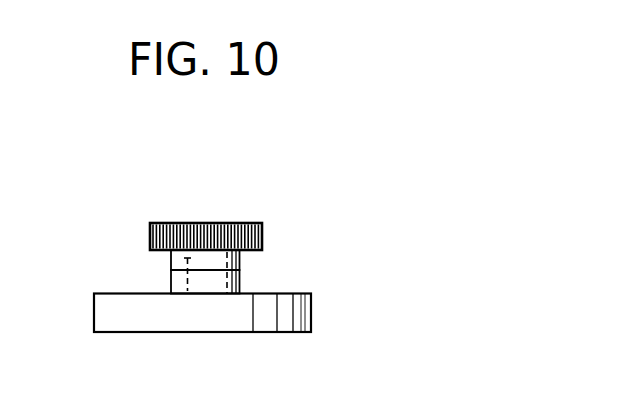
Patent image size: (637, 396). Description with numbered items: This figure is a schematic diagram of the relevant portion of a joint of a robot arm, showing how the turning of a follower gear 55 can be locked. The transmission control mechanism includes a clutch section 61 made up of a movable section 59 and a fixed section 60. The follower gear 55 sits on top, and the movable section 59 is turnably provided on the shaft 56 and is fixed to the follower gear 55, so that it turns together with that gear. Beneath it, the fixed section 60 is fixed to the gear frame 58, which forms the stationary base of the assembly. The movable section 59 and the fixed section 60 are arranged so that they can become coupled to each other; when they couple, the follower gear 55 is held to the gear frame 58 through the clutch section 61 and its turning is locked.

The follower gear 55 is at (149, 223).
The shaft 56 is at (187, 258).
The gear frame 58 is at (311, 312).
The movable section 59 is at (240, 260).
The fixed section 60 is at (240, 282).
The clutch section 61 is at (351, 259).